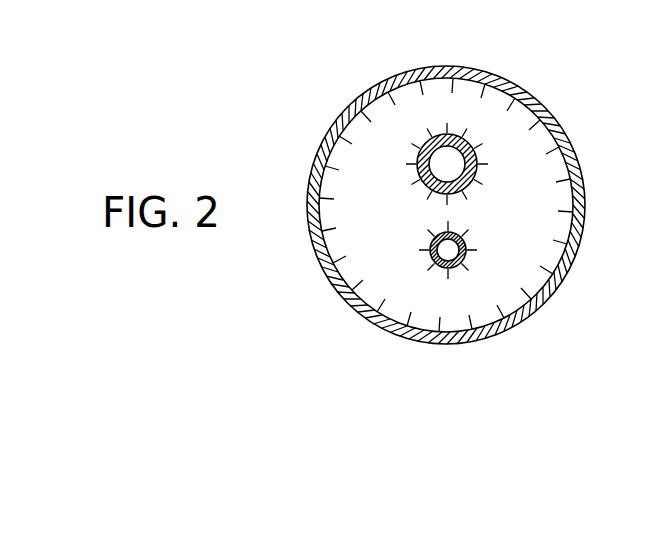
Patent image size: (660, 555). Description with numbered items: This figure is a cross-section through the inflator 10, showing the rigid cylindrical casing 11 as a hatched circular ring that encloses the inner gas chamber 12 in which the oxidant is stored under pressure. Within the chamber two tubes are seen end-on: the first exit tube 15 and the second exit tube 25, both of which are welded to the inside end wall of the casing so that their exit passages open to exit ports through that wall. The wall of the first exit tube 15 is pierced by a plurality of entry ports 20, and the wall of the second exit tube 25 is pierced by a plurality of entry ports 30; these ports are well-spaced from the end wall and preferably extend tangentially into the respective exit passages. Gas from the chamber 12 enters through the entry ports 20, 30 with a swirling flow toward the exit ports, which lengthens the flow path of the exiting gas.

The inflator 10 is at (477, 174).
The rigid cylindrical casing 11 is at (502, 72).
The inner gas chamber 12 is at (535, 222).
The first exit tube 15 is at (432, 262).
The entry ports 20 is at (452, 272).
The second exit tube 25 is at (419, 158).
The entry ports 30 is at (461, 134).